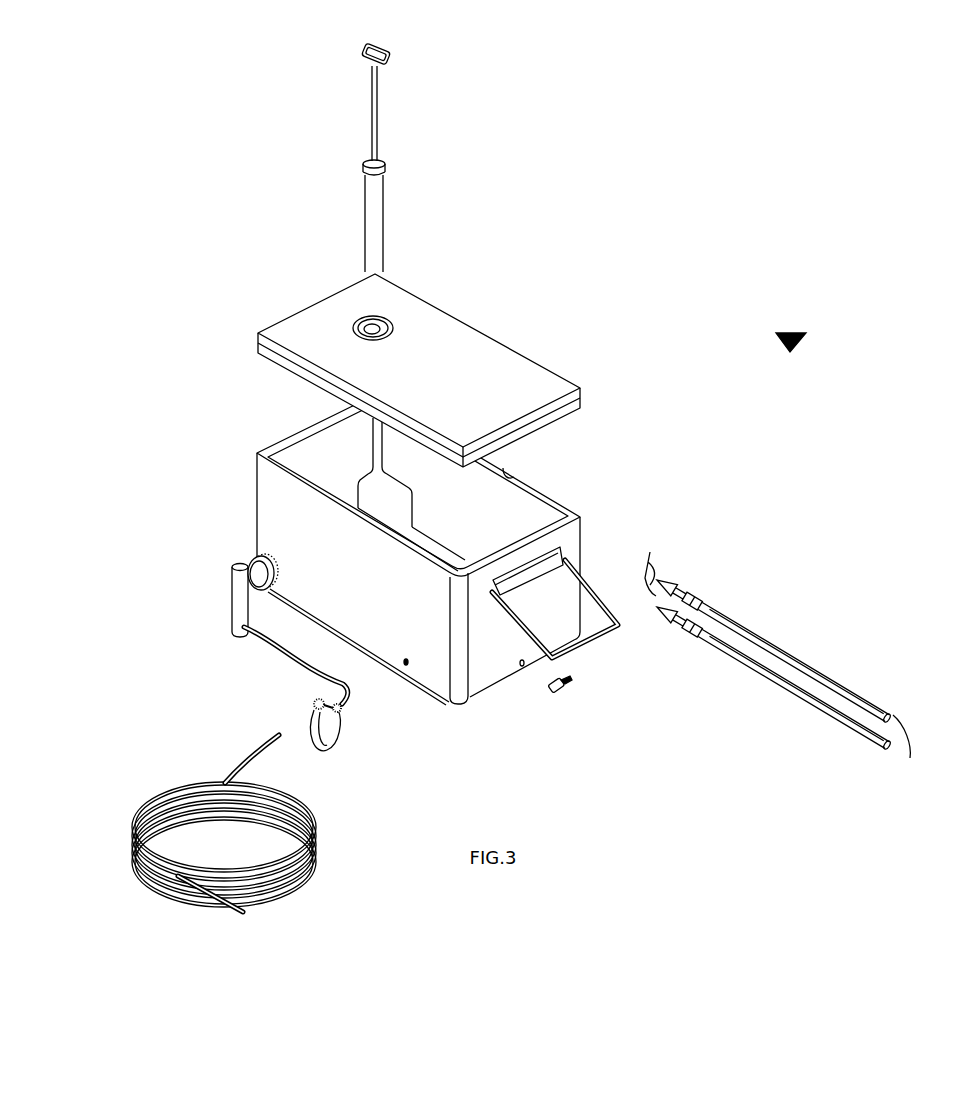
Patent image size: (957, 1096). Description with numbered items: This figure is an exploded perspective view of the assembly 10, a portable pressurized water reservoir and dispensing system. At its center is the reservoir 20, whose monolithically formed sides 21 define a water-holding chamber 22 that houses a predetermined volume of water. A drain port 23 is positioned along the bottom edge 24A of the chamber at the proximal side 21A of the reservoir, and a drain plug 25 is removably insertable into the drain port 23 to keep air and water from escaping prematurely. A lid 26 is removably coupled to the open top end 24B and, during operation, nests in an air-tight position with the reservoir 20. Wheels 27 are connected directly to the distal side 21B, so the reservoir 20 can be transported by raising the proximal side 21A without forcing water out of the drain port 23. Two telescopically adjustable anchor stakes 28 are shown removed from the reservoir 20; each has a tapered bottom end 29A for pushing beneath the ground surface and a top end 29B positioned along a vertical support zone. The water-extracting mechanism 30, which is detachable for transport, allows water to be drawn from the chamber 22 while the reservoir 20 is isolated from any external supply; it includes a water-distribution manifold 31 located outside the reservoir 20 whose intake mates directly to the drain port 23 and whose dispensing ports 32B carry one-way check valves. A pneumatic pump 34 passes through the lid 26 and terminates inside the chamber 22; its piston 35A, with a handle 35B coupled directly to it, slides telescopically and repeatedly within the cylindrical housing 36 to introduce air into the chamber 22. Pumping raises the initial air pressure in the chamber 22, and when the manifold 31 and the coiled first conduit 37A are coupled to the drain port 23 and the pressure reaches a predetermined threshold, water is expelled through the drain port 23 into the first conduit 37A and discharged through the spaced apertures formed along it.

The assembly 10 is at (790, 333).
The reservoir 20 is at (441, 574).
The sides 21 is at (530, 497).
The proximal side 21A is at (487, 665).
The distal side 21B is at (291, 463).
The water-holding chamber 22 is at (462, 537).
The drain port 23 is at (406, 665).
The bottom edge 24A is at (483, 697).
The open top end 24B is at (508, 468).
The drain plug 25 is at (570, 690).
The lid 26 is at (262, 337).
The wheels 27 is at (253, 565).
The anchor stakes 28 is at (803, 664).
The tapered bottom ends 29A is at (650, 552).
The top ends 29B is at (910, 758).
The water-extracting mechanism 30 is at (201, 774).
The water-distribution manifold 31 is at (345, 712).
The dispensing ports 32B is at (322, 722).
The pneumatic pump 34 is at (380, 118).
The piston 35A is at (385, 198).
The handle 35B is at (388, 52).
The cylindrical housing 36 is at (392, 325).
The first conduit 37A is at (148, 807).